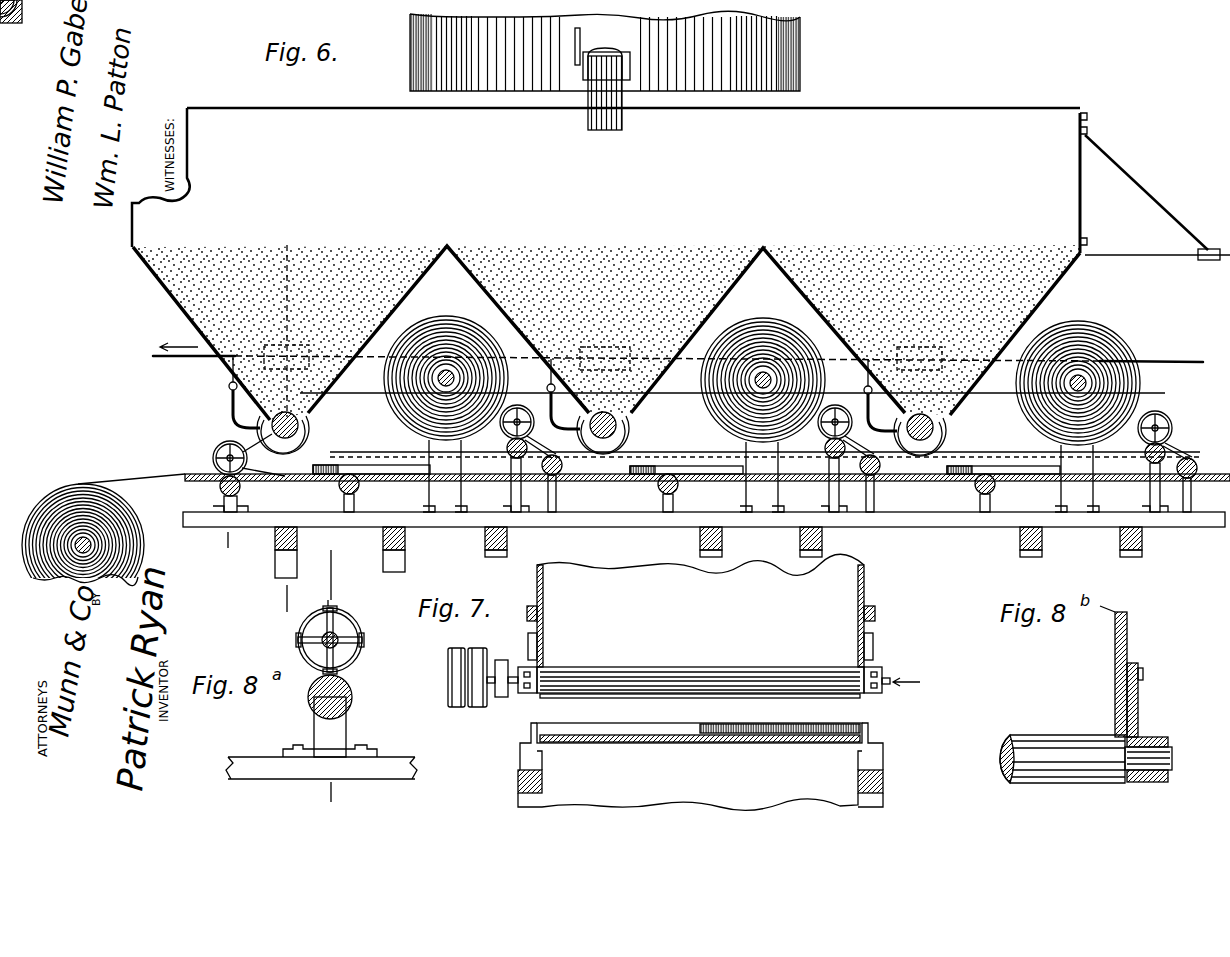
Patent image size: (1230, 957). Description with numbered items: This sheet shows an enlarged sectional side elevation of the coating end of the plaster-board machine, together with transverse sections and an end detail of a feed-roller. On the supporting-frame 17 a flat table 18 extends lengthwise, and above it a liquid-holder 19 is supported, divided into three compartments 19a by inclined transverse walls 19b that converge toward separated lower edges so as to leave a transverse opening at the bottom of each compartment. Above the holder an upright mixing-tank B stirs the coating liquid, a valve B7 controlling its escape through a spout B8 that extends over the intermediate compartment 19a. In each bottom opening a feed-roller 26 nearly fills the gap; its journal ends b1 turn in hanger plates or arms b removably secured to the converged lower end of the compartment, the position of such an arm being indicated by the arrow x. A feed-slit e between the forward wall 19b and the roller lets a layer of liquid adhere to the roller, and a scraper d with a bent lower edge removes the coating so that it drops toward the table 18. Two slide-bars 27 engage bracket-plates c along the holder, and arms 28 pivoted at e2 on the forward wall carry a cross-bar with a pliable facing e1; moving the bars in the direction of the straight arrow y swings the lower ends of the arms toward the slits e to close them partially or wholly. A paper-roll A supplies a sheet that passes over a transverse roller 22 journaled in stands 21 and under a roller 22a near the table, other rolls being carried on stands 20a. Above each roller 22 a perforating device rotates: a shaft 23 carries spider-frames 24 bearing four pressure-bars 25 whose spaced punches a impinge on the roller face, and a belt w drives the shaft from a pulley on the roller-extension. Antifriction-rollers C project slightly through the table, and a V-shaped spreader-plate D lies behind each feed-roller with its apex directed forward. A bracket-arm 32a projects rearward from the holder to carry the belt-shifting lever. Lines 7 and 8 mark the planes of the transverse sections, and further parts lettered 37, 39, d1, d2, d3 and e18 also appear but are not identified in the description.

In FIG. 6, the mixing-tank B is at (800, 66).
In FIG. 6, the valve B7 is at (612, 53).
In FIG. 6, the spout B8 is at (622, 127).
In FIG. 6, the holder 19 is at (604, 264).
In FIG. 6, the compartment 19a is at (1066, 291).
In FIG. 7, the compartment 19a is at (866, 574).
In FIG. 8b, the compartment 19a is at (1128, 650).
In FIG. 6, the transverse walls 19b is at (729, 310).
In FIG. 7, the transverse walls 19b is at (700, 597).
In FIG. 8b, the transverse walls 19b is at (1071, 684).
In FIG. 6, the bracket-arm 32a is at (1192, 256).
In FIG. 6, the section line 7 is at (287, 318).
In FIG. 8a, the section line 7 is at (287, 608).
In FIG. 6, the section line 8 is at (220, 540).
In FIG. 8a, the section line 8 is at (338, 677).
In FIG. 6, the slide-bars 27 is at (197, 359).
In FIG. 7, the slide-bars 27 is at (526, 613).
In FIG. 6, the rod 37 is at (732, 384).
In FIG. 6, the straight arrow y is at (179, 339).
In FIG. 7, the arrow x is at (907, 690).
In FIG. 6, the feed-roller 26 is at (300, 430).
In FIG. 7, the feed-roller 26 is at (778, 694).
In FIG. 8b, the feed-roller 26 is at (1075, 783).
In FIG. 6, the scraper d is at (611, 430).
In FIG. 6, the casing part d1 is at (388, 426).
In FIG. 6, the casing part d2 is at (632, 430).
In FIG. 6, the casing part d3 is at (1003, 428).
In FIG. 6, the feed-slit e is at (244, 408).
In FIG. 6, the pliable facing e1 is at (726, 408).
In FIG. 6, the pivot e2 is at (864, 391).
In FIG. 6, the gate arm e18 is at (197, 427).
In FIG. 6, the arms 28 is at (230, 404).
In FIG. 6, the shaft 23 is at (213, 455).
In FIG. 8a, the shaft 23 is at (343, 632).
In FIG. 6, the spider-frames 24 is at (1176, 421).
In FIG. 8a, the spider-frames 24 is at (362, 655).
In FIG. 8a, the pressure-bars 25 is at (338, 610).
In FIG. 6, the transverse rollers 22 is at (222, 492).
In FIG. 8a, the transverse rollers 22 is at (352, 697).
In FIG. 6, the roller 22a is at (560, 476).
In FIG. 6, the stands 21 is at (233, 494).
In FIG. 8a, the stands 21 is at (335, 745).
In FIG. 6, the stands 20a is at (1110, 499).
In FIG. 6, the table 18 is at (183, 480).
In FIG. 7, the table 18 is at (783, 742).
In FIG. 6, the supporting-frame 17 is at (605, 526).
In FIG. 7, the supporting-frame 17 is at (883, 778).
In FIG. 8a, the supporting-frame 17 is at (393, 764).
In FIG. 6, the antifriction-rollers C is at (359, 489).
In FIG. 6, the spreader-plate D is at (690, 499).
In FIG. 6, the belt w is at (741, 467).
In FIG. 6, the rod 39 is at (1020, 457).
In FIG. 6, the paper-roll A is at (78, 486).
In FIG. 8a, the punches a is at (326, 612).
In FIG. 7, the hanger plates or arms b is at (528, 646).
In FIG. 8b, the hanger plates or arms b is at (1138, 712).
In FIG. 7, the journal ends b1 is at (899, 666).
In FIG. 8b, the journal ends b1 is at (1172, 770).
In FIG. 7, the bracket-plates c is at (531, 606).